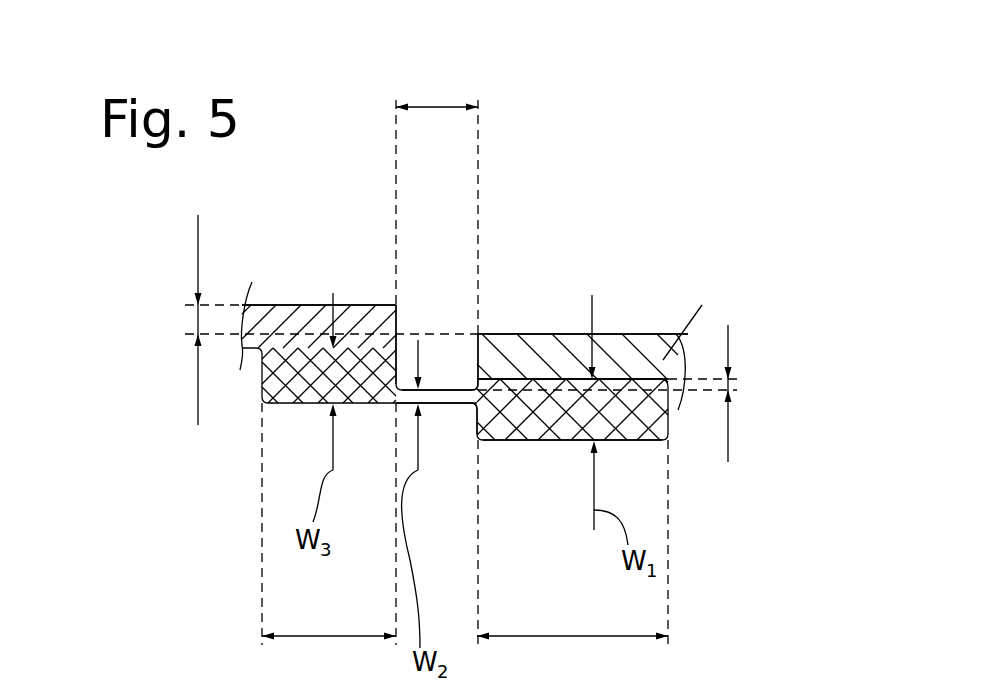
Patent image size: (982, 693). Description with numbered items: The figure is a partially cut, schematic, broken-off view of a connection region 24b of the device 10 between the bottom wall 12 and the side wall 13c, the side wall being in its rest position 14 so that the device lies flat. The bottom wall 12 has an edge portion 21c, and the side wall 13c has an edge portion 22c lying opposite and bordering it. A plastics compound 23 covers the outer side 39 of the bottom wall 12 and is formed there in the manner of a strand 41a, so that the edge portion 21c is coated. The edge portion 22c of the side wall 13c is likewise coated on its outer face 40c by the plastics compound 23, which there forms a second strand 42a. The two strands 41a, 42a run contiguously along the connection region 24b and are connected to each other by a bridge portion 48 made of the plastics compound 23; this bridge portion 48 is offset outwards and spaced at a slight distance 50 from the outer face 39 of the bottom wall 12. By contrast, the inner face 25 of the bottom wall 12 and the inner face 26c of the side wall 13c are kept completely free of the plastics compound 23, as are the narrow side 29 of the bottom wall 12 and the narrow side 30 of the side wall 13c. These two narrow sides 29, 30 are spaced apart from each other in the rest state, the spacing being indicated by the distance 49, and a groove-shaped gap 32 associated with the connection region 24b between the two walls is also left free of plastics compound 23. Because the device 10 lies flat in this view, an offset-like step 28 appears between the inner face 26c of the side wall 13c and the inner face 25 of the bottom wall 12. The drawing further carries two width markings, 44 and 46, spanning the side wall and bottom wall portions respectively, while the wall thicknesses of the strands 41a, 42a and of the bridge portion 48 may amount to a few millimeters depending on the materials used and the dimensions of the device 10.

The device 10 is at (728, 272).
The bottom wall 12 is at (676, 334).
The side wall 13c is at (265, 322).
The rest position 14 is at (543, 218).
The edge portion of the bottom wall 21c is at (613, 334).
The edge portion of the side wall 22c is at (312, 320).
The plastics compound 23 is at (553, 407).
The connection region 24b is at (438, 415).
The inner face of the bottom wall 25 is at (567, 334).
The inner face of the side wall 26c is at (352, 305).
The offset-like step 28 is at (198, 250).
The narrow side of the bottom wall 29 is at (474, 362).
The narrow side of the side wall 30 is at (407, 324).
The groove-shaped gap 32 is at (439, 378).
The outer side of the bottom wall 39 is at (627, 417).
The outer face of the side wall 40c is at (300, 360).
The strand 41a is at (512, 420).
The strand 42a is at (357, 375).
The width of first workpiece 44 is at (327, 636).
The width of second workpiece 46 is at (595, 636).
The bridge portion 48 is at (460, 402).
The distance 49 is at (438, 106).
The slight distance 50 is at (728, 442).